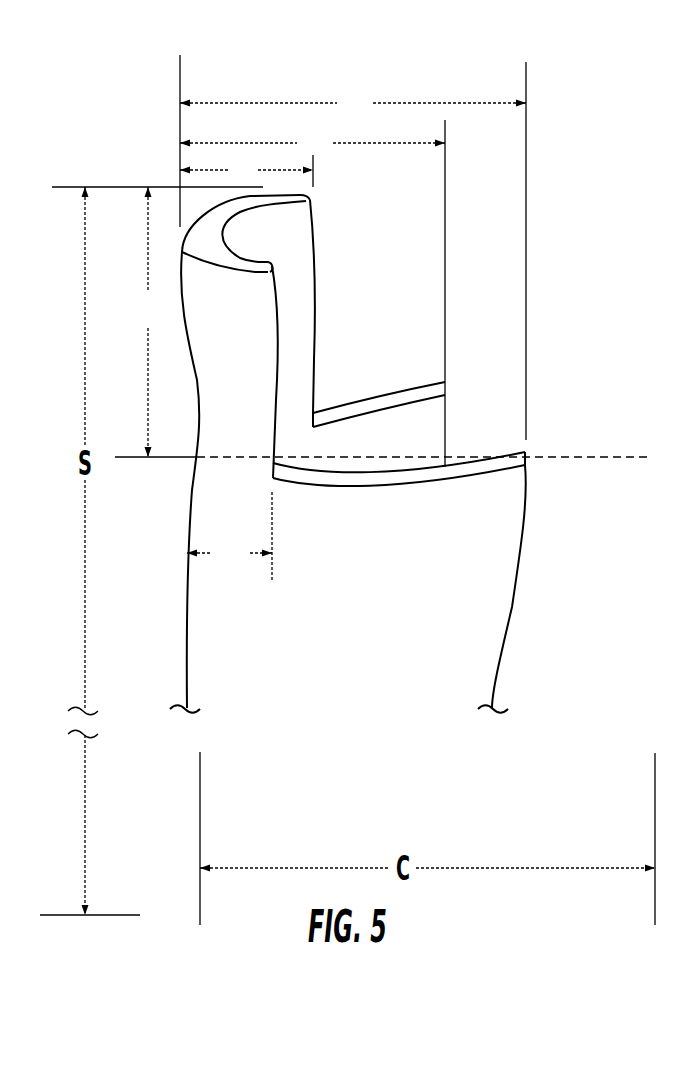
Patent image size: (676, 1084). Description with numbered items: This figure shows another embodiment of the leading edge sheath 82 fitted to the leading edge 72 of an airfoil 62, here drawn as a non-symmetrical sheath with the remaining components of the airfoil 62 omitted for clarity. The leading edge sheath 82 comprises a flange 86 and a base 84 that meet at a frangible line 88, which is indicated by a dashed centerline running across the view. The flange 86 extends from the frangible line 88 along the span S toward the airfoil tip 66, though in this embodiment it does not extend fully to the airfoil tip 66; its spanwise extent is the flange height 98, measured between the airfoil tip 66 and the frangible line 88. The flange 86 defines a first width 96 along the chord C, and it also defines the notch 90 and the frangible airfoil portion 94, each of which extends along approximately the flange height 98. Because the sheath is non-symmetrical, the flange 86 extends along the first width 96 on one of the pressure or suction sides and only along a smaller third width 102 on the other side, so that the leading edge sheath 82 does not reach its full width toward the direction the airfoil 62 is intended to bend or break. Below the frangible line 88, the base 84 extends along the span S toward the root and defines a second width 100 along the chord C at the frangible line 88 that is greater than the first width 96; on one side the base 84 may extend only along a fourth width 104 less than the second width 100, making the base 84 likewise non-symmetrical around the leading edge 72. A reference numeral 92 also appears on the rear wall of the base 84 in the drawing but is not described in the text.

The airfoil 62 is at (215, 637).
The airfoil tip 66 is at (150, 170).
The leading edge 72 is at (187, 602).
The leading edge sheath 82 is at (127, 110).
The base 84 is at (217, 663).
The flange 86 is at (305, 275).
The frangible line 88 is at (563, 457).
The notch 90 is at (365, 220).
The rear wall 92 is at (485, 610).
The frangible airfoil portion 94 is at (305, 332).
The first width 96 is at (246, 170).
The flange height 98 is at (148, 322).
The second width 100 is at (353, 251).
The third width 102 is at (229, 536).
The fourth width 104 is at (312, 293).